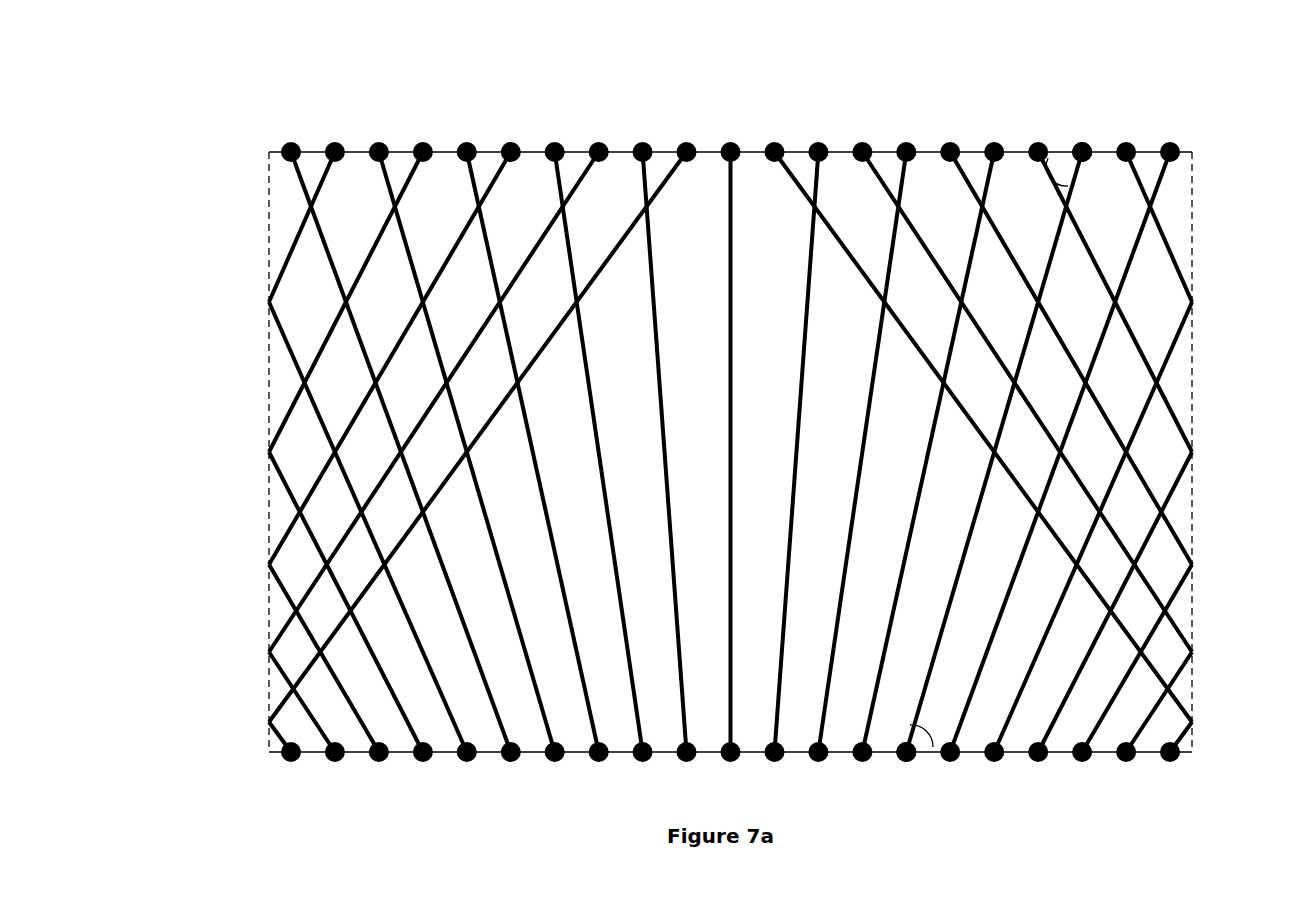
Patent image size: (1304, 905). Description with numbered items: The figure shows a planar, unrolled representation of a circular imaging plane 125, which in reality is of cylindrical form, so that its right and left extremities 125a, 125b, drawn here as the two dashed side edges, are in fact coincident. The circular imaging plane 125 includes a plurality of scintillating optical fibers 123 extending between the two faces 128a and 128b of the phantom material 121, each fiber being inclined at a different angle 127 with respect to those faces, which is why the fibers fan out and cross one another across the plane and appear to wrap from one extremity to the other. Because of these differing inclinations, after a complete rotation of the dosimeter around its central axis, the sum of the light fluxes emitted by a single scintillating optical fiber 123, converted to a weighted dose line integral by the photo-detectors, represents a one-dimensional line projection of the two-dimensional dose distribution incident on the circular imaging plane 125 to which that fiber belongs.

The phantom material 121 is at (1018, 624).
The scintillating optical fiber 123 is at (366, 362).
The circular imaging plane 125 is at (1112, 100).
The left extremity of circular imaging plane 125a is at (268, 230).
The right extremity of circular imaging plane 125b is at (1193, 366).
The angle of inclination 127 is at (1065, 168).
The face of phantom material 128a is at (400, 118).
The face of phantom material 128b is at (1065, 772).